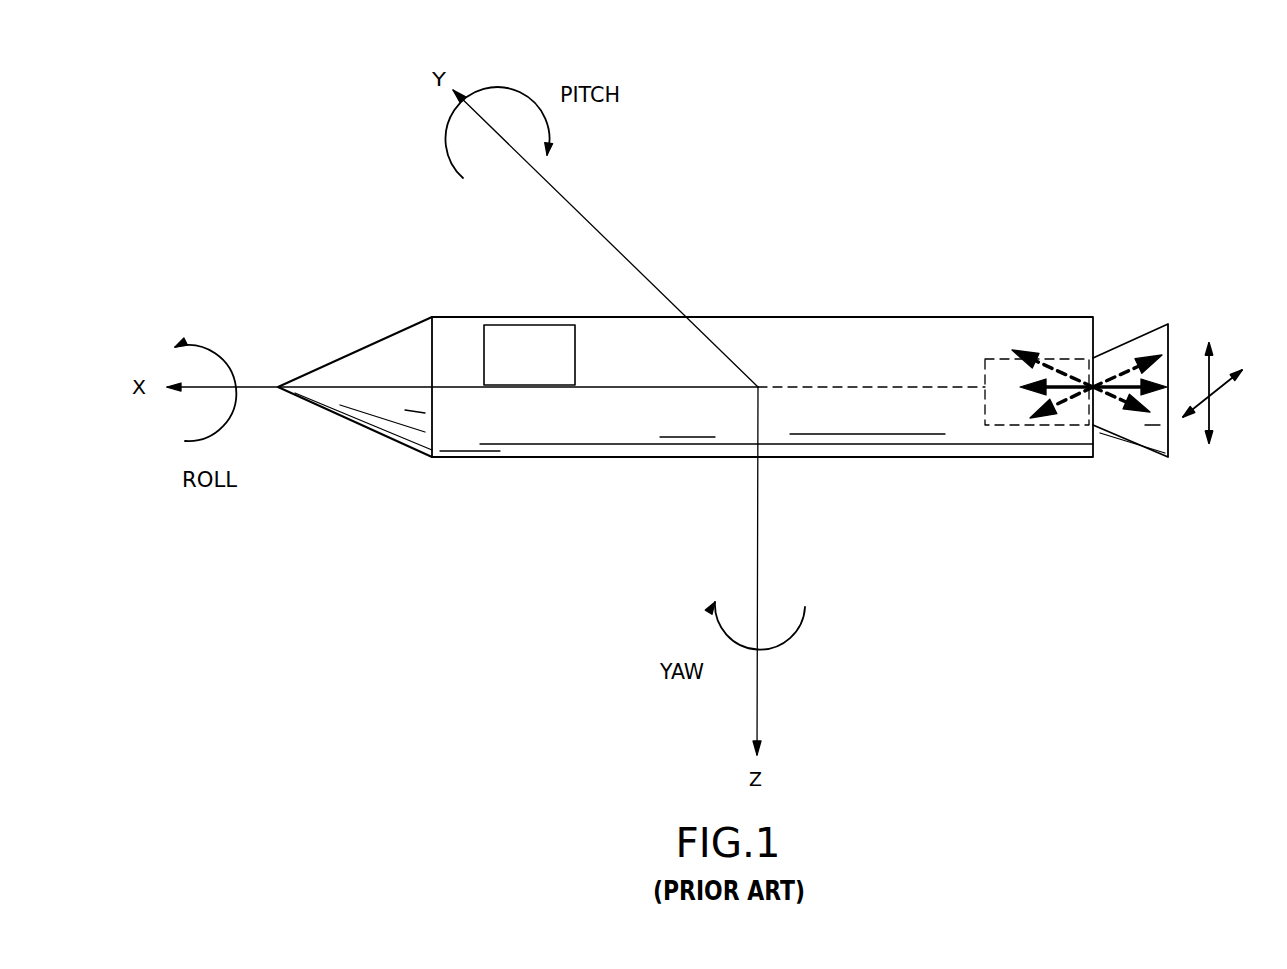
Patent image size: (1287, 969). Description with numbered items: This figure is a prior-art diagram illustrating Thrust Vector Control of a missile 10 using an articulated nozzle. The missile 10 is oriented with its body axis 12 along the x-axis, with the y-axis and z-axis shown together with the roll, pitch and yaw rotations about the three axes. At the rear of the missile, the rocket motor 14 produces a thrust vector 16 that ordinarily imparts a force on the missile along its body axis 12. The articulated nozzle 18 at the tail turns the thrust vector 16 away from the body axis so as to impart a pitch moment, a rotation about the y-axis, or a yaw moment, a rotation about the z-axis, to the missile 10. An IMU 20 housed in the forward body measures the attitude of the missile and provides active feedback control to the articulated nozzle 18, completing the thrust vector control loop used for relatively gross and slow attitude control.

The missile 10 is at (760, 418).
The body axis 12 is at (835, 387).
The rocket motor 14 is at (1005, 425).
The thrust vector 16 is at (1060, 390).
The articulated nozzle 18 is at (1133, 445).
The IMU 20 is at (515, 323).